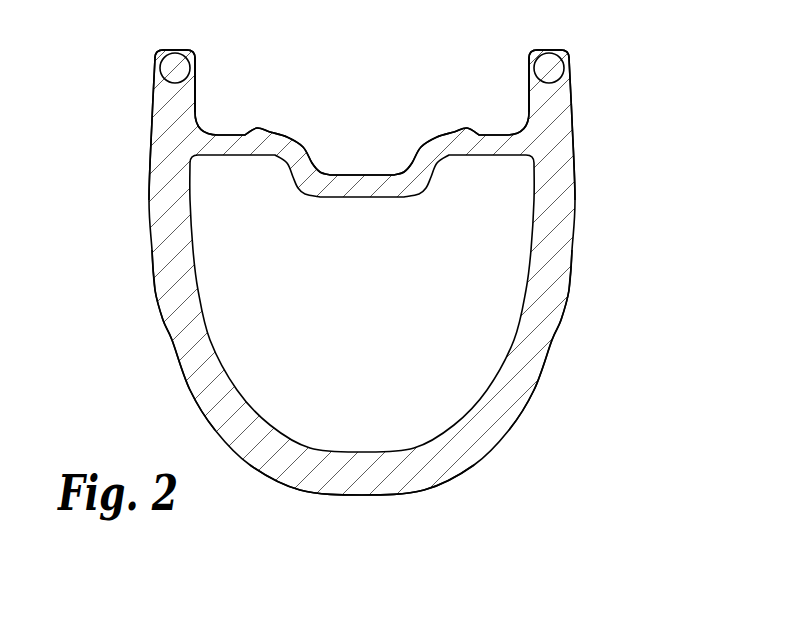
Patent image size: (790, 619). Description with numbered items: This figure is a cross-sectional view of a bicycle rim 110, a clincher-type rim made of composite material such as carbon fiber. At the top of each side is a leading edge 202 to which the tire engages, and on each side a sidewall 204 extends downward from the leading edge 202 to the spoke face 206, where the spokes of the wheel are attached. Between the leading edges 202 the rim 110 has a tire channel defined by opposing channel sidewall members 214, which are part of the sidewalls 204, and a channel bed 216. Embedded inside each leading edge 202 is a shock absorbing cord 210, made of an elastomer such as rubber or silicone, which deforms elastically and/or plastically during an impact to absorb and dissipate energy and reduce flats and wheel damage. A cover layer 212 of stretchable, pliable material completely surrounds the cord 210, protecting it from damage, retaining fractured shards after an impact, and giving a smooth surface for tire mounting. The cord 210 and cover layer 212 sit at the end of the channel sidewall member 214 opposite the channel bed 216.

The rim 110 is at (552, 122).
The leading edge 202 is at (152, 108).
The sidewall 204 is at (183, 342).
The spoke face 206 is at (360, 490).
The shock absorbing cord 210 is at (182, 75).
The cover layer 212 is at (172, 52).
The channel sidewall member 214 is at (188, 105).
The channel bed 216 is at (280, 132).